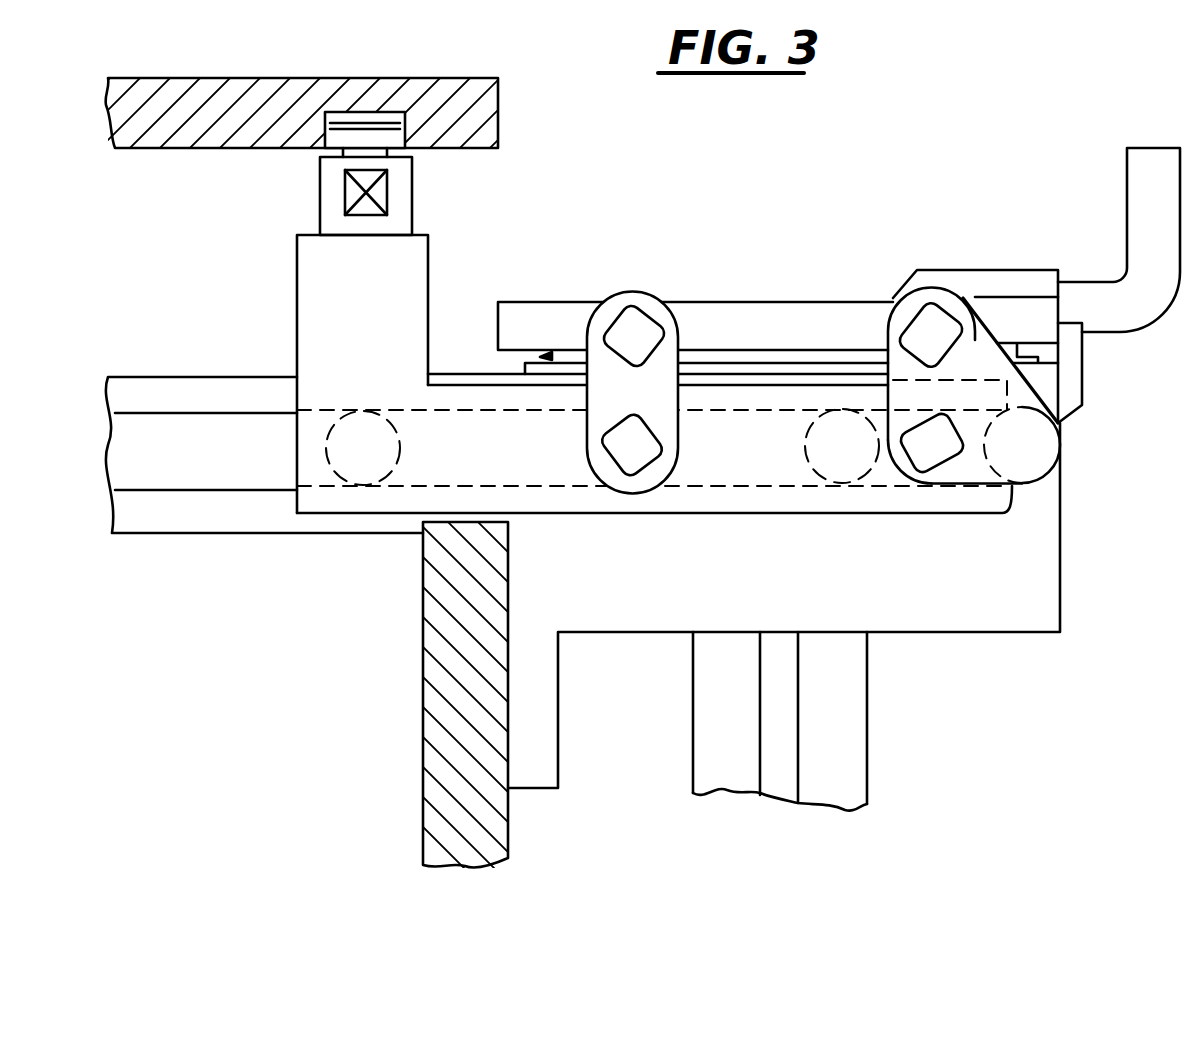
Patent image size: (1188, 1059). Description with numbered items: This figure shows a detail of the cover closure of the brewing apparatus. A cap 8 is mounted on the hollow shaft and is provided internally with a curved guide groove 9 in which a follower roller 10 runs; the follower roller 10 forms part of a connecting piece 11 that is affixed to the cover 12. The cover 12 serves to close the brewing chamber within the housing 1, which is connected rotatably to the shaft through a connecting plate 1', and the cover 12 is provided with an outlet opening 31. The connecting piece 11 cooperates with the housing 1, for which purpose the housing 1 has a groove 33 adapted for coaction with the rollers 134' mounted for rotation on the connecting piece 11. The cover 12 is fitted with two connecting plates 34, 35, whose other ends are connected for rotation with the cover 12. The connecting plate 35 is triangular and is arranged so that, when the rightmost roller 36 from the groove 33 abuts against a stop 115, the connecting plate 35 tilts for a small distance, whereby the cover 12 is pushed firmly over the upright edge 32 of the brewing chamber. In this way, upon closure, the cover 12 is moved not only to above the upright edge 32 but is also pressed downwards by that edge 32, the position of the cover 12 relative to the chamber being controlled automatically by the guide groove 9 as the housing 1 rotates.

The housing 1 is at (690, 595).
The connecting plate 1' is at (440, 674).
The cap 8 is at (445, 95).
The curved guide groove 9 is at (393, 120).
The follower roller 10 is at (337, 137).
The connecting piece 11 is at (412, 257).
The cover 12 is at (752, 310).
The outlet opening 31 is at (1143, 168).
The upright edge 32 is at (540, 356).
The groove 33 is at (197, 433).
The connecting plate 34 is at (617, 302).
The connecting plate 35 is at (975, 302).
The rightmost roller 36 is at (1047, 460).
The stop 115 is at (1068, 360).
The roller 134' is at (591, 488).